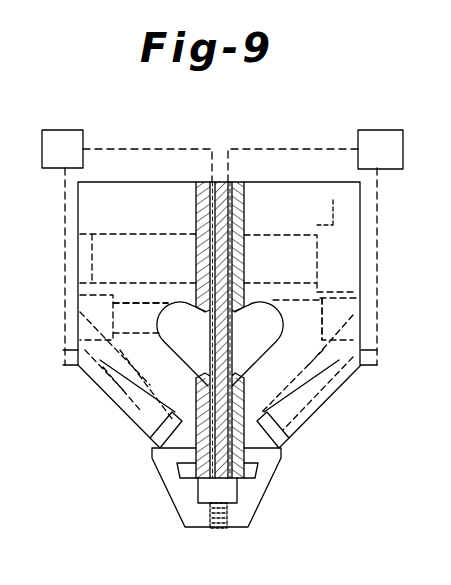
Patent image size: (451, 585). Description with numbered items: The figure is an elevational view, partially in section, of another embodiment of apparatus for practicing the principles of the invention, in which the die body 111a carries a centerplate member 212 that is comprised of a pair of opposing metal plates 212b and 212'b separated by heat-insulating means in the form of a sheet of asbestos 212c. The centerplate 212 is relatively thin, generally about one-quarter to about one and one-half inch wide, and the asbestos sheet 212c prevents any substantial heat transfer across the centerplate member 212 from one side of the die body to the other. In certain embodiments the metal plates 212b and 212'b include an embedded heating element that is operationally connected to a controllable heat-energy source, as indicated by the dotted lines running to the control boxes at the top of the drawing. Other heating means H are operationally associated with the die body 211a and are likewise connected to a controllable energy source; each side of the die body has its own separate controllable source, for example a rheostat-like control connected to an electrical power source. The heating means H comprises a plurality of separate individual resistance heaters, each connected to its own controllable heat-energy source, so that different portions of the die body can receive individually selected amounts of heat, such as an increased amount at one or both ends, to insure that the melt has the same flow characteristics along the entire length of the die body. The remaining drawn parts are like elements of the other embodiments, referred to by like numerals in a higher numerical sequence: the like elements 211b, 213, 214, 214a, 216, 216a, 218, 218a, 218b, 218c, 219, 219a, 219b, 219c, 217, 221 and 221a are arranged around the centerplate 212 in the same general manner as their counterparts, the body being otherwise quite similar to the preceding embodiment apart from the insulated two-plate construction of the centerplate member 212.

The die body 111a is at (281, 142).
The centerplate member 212 is at (220, 298).
The opposing metal plate 212'b is at (166, 207).
The opposing metal plate 212b is at (240, 208).
The sheet of asbestos 212c is at (234, 223).
The passage 213 is at (331, 208).
The die body 211a is at (110, 200).
The right housing block 211b is at (352, 226).
The heating means H is at (64, 274).
The passage 216a is at (120, 336).
The passage 216 is at (306, 336).
The left chamber 219 is at (190, 336).
The right chamber 218 is at (259, 336).
The left chamber wall 219a is at (200, 396).
The right chamber wall 218a is at (234, 396).
The left inclined passage 214a is at (136, 412).
The right inclined passage 214 is at (336, 413).
The left flange 219b is at (172, 455).
The right flange 218b is at (262, 456).
The left slot 219c is at (205, 496).
The right slot 218c is at (240, 490).
The cup member 221 is at (205, 480).
The nozzle fitting 217 is at (271, 517).
The threaded stud 221a is at (210, 538).